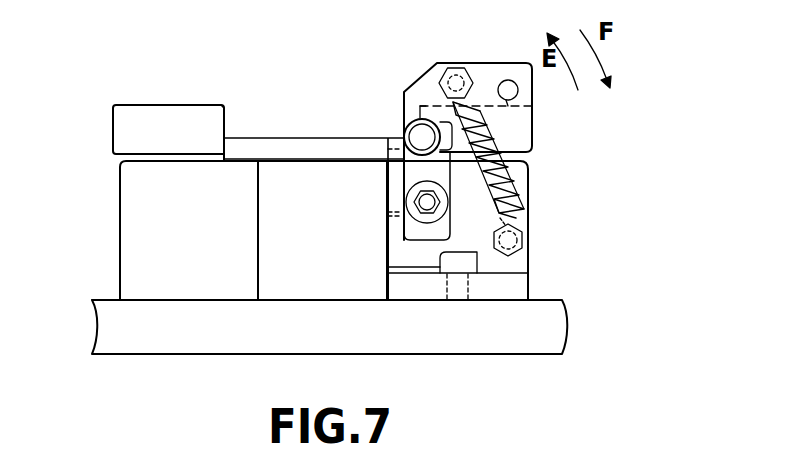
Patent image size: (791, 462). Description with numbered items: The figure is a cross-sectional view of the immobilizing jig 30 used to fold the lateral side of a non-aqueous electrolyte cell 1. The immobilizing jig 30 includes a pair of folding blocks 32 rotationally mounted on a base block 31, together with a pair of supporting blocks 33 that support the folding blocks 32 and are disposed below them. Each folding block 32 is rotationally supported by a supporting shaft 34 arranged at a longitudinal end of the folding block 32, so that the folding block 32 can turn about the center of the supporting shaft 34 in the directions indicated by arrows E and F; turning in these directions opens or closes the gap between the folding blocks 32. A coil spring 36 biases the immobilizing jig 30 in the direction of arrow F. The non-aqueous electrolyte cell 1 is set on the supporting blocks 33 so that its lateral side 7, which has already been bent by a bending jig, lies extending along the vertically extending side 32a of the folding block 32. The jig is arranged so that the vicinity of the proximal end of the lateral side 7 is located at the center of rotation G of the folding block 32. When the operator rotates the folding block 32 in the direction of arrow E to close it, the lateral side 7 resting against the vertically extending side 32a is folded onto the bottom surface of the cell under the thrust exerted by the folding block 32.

The non-aqueous electrolyte cell 1 is at (295, 122).
The lateral side 7 is at (226, 135).
The immobilizing jig 30 is at (588, 265).
The base block 31 is at (512, 349).
The folding block 32 is at (134, 121).
The vertically extending side 32a is at (223, 107).
The supporting block 33 is at (128, 238).
The supporting shaft 34 is at (422, 118).
The coil spring 36 is at (500, 174).
The center of rotation G is at (228, 140).